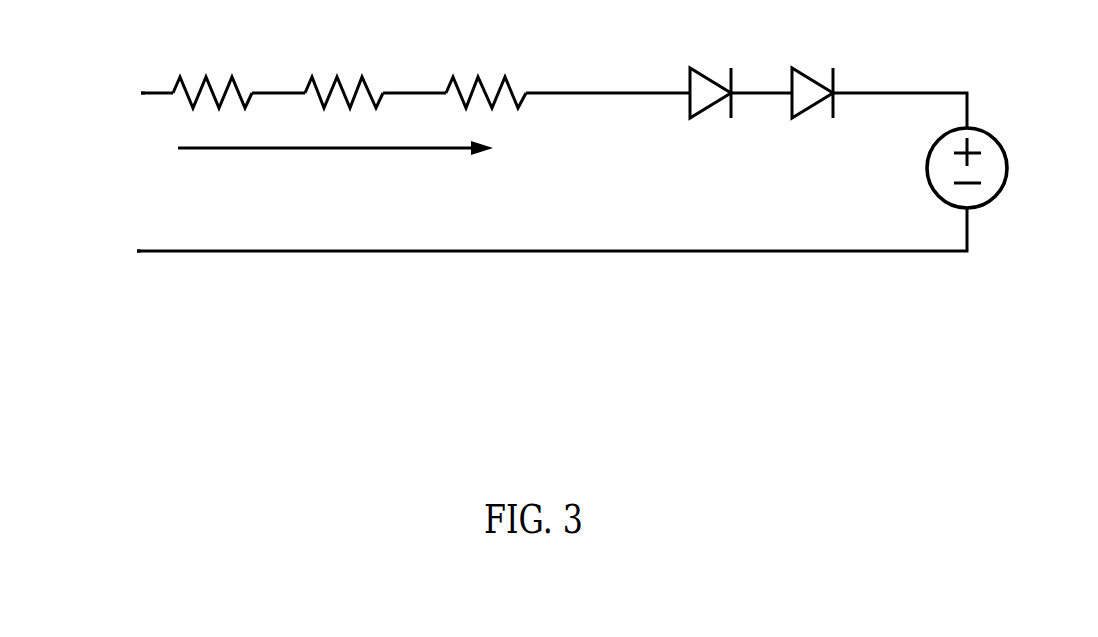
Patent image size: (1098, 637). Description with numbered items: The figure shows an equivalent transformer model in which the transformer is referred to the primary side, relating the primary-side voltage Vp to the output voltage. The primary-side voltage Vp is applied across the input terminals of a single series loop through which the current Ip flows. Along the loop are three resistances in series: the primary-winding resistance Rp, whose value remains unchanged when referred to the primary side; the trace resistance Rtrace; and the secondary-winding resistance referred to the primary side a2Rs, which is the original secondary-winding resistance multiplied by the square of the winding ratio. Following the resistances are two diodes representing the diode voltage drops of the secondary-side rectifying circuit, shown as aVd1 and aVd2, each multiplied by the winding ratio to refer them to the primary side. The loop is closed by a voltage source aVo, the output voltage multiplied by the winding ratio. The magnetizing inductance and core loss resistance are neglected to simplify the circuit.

The primary-winding resistance Rp is at (212, 62).
The trace resistance Rtrace is at (344, 62).
The secondary-winding resistance referred to primary side a2Rs is at (486, 62).
The first diode voltage drop referred to primary side aVd1 is at (699, 64).
The second diode voltage drop referred to primary side aVd2 is at (822, 64).
The output voltage referred to primary side aVo is at (1003, 168).
The primary-side current Ip is at (315, 152).
The primary-side voltage Vp is at (96, 172).